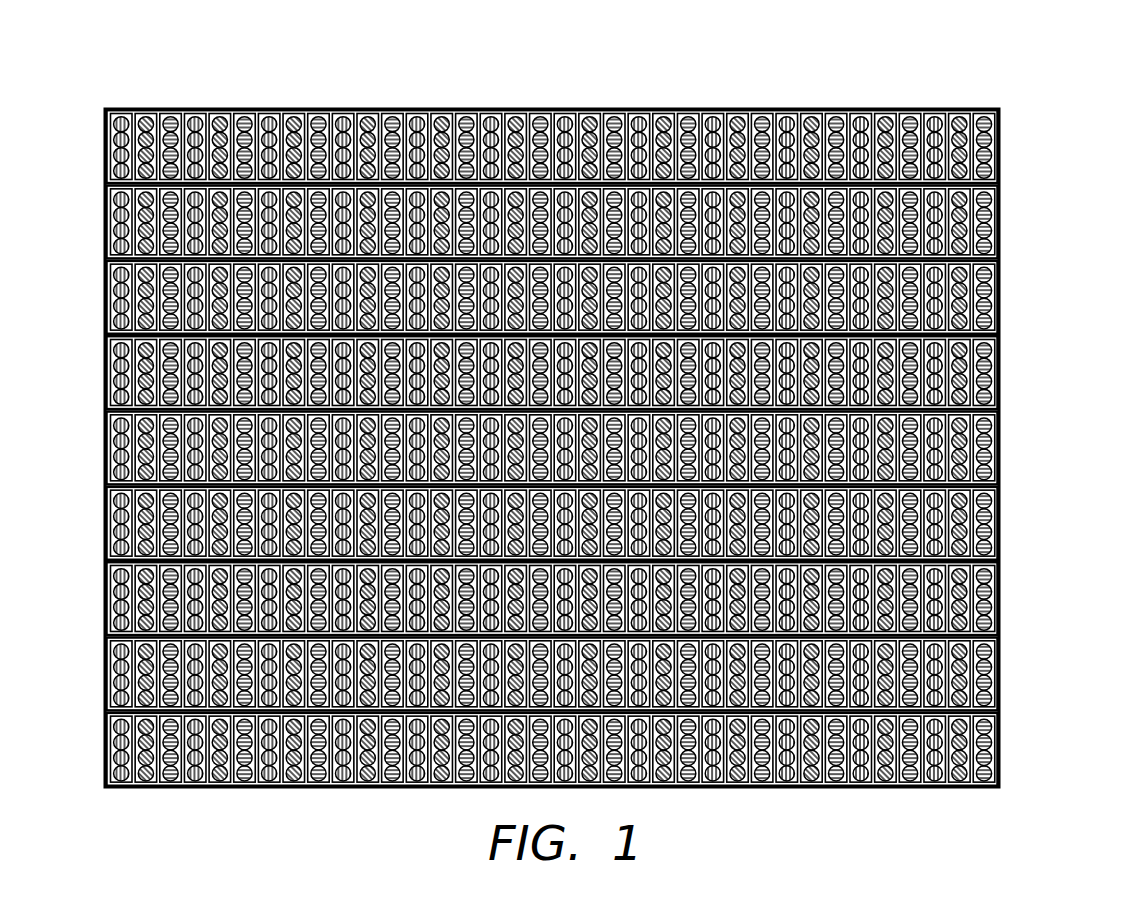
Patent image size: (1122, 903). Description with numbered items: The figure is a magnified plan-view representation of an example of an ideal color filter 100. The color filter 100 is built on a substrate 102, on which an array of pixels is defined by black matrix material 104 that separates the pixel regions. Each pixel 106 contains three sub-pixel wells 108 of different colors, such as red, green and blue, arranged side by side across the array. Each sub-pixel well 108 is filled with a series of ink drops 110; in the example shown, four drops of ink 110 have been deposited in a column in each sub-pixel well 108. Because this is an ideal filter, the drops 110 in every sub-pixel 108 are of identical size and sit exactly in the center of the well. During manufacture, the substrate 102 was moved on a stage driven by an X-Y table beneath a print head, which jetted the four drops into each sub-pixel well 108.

The color filter 100 is at (183, 80).
The substrate 102 is at (1002, 108).
The black matrix material 104 is at (1001, 184).
The pixel 106 is at (843, 103).
The sub-pixel well 108 is at (682, 113).
The ink drops 110 is at (540, 116).